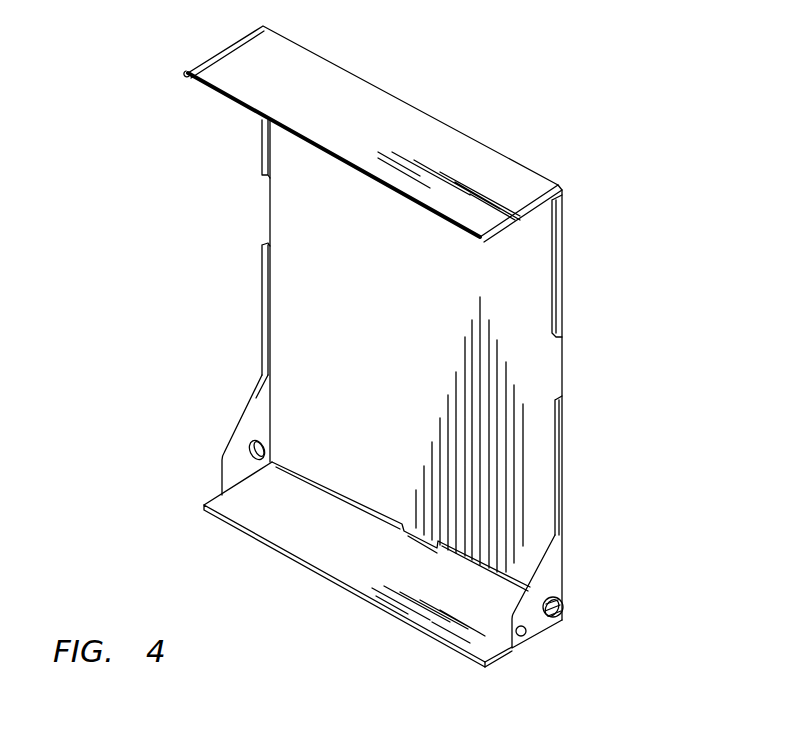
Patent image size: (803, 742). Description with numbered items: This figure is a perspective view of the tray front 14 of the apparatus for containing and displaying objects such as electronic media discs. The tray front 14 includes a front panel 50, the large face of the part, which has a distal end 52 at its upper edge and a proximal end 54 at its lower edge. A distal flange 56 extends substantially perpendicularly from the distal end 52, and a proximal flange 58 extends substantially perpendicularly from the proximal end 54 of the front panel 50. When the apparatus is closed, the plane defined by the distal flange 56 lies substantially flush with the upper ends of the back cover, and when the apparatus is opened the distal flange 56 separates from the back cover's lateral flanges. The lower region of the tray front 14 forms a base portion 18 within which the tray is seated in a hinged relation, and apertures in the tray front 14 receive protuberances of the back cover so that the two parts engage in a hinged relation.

The tray front 14 is at (234, 293).
The base portion 18 is at (191, 494).
The front panel 50 is at (518, 285).
The distal end 52 is at (234, 121).
The proximal end 54 is at (539, 657).
The distal flange 56 is at (403, 128).
The proximal flange 58 is at (313, 522).